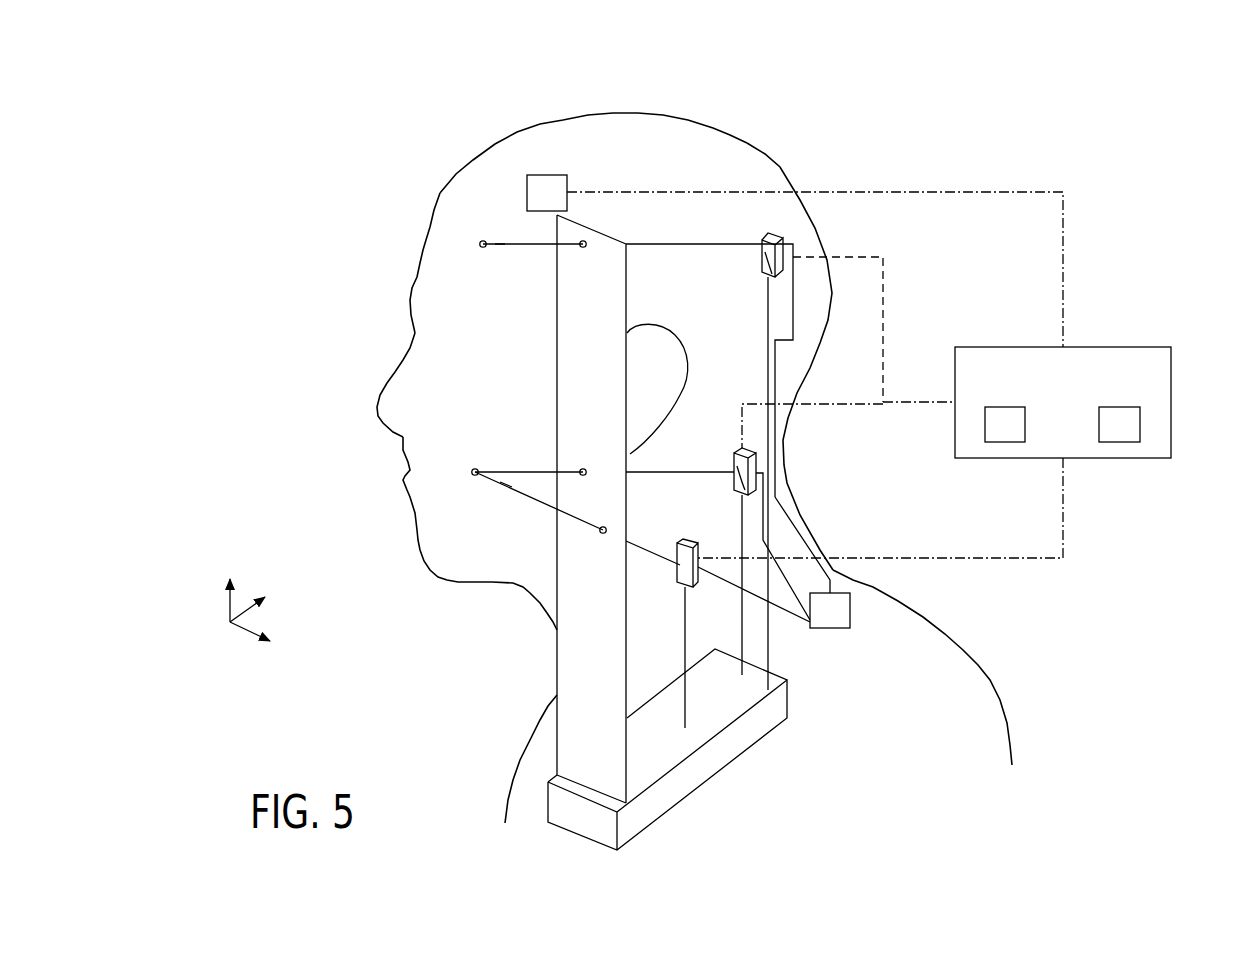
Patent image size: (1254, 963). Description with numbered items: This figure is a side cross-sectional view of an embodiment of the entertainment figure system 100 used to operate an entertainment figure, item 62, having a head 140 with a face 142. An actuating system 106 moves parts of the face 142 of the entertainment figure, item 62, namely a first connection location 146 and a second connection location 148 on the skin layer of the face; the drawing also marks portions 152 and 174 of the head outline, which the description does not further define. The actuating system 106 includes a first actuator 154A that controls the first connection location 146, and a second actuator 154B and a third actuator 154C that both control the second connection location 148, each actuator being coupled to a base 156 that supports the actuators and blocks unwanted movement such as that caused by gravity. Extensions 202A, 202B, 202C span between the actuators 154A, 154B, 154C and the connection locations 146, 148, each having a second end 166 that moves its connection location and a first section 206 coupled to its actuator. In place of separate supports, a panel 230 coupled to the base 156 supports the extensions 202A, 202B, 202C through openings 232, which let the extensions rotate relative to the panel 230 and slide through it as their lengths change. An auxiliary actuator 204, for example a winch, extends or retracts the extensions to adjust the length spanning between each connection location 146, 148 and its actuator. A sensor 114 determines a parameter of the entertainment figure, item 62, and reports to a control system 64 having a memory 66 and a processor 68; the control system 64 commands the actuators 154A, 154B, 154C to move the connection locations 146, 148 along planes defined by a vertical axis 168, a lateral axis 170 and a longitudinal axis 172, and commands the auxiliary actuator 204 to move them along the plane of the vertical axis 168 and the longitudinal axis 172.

The entertainment figure 62 is at (846, 127).
The control system 64 is at (1063, 401).
The memory 66 is at (1007, 442).
The processor 68 is at (1120, 442).
The entertainment figure system 100 is at (1191, 147).
The actuating system 106 is at (854, 682).
The sensor 114 is at (567, 182).
The head 140 is at (494, 149).
The face 142 is at (382, 187).
The first connection location 146 is at (483, 246).
The second connection location 148 is at (475, 472).
The forehead 152 is at (422, 278).
The first actuator 154A is at (770, 232).
The second actuator 154B is at (734, 462).
The third actuator 154C is at (703, 527).
The base 156 is at (728, 743).
The second end 166 is at (500, 246).
The vertical axis 168 is at (228, 607).
The lateral axis 170 is at (250, 633).
The longitudinal axis 172 is at (247, 602).
The nose 174 is at (391, 335).
The first extension 202A is at (657, 256).
The second extension 202B is at (531, 451).
The third extension 202C is at (526, 523).
The auxiliary actuator 204 is at (850, 612).
The first section 206 is at (762, 263).
The panel 230 is at (585, 670).
The openings 232 is at (584, 242).